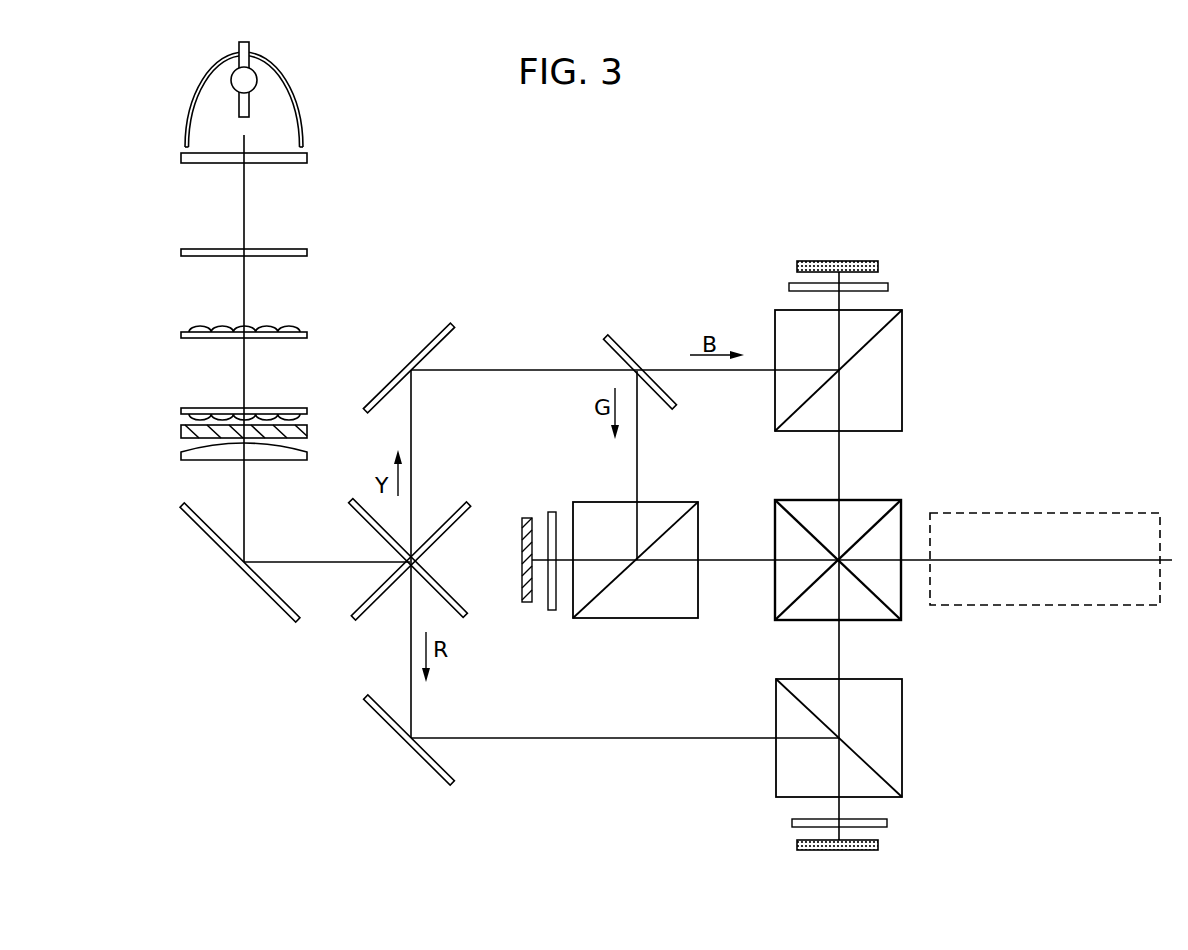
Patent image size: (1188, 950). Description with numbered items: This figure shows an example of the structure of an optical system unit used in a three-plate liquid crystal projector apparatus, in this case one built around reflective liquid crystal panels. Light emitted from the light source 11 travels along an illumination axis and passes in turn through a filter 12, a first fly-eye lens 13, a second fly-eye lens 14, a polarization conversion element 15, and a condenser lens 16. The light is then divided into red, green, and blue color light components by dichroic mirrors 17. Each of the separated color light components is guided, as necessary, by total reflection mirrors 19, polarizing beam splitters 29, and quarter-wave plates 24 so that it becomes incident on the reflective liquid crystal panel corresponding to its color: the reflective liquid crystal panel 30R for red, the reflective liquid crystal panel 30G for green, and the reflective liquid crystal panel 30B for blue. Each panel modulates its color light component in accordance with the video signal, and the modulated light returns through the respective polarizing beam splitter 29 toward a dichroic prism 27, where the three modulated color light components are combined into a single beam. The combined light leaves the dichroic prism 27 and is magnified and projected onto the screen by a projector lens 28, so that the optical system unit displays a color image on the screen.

The light source 11 is at (208, 70).
The filter 12 is at (181, 252).
The first fly-eye lens 13 is at (181, 335).
The second fly-eye lens 14 is at (181, 412).
The polarization conversion element 15 is at (178, 432).
The condenser lens 16 is at (293, 462).
The dichroic mirror 17 is at (610, 340).
The total reflection mirror 19 is at (280, 614).
The quarter-wave plate 24 is at (554, 612).
The dichroic prism 27 is at (903, 606).
The projector lens 28 is at (1055, 606).
The polarizing beam splitter 29 is at (903, 375).
The reflective liquid crystal panel 30B is at (880, 265).
The reflective liquid crystal panel 30G is at (530, 605).
The reflective liquid crystal panel 30R is at (880, 845).